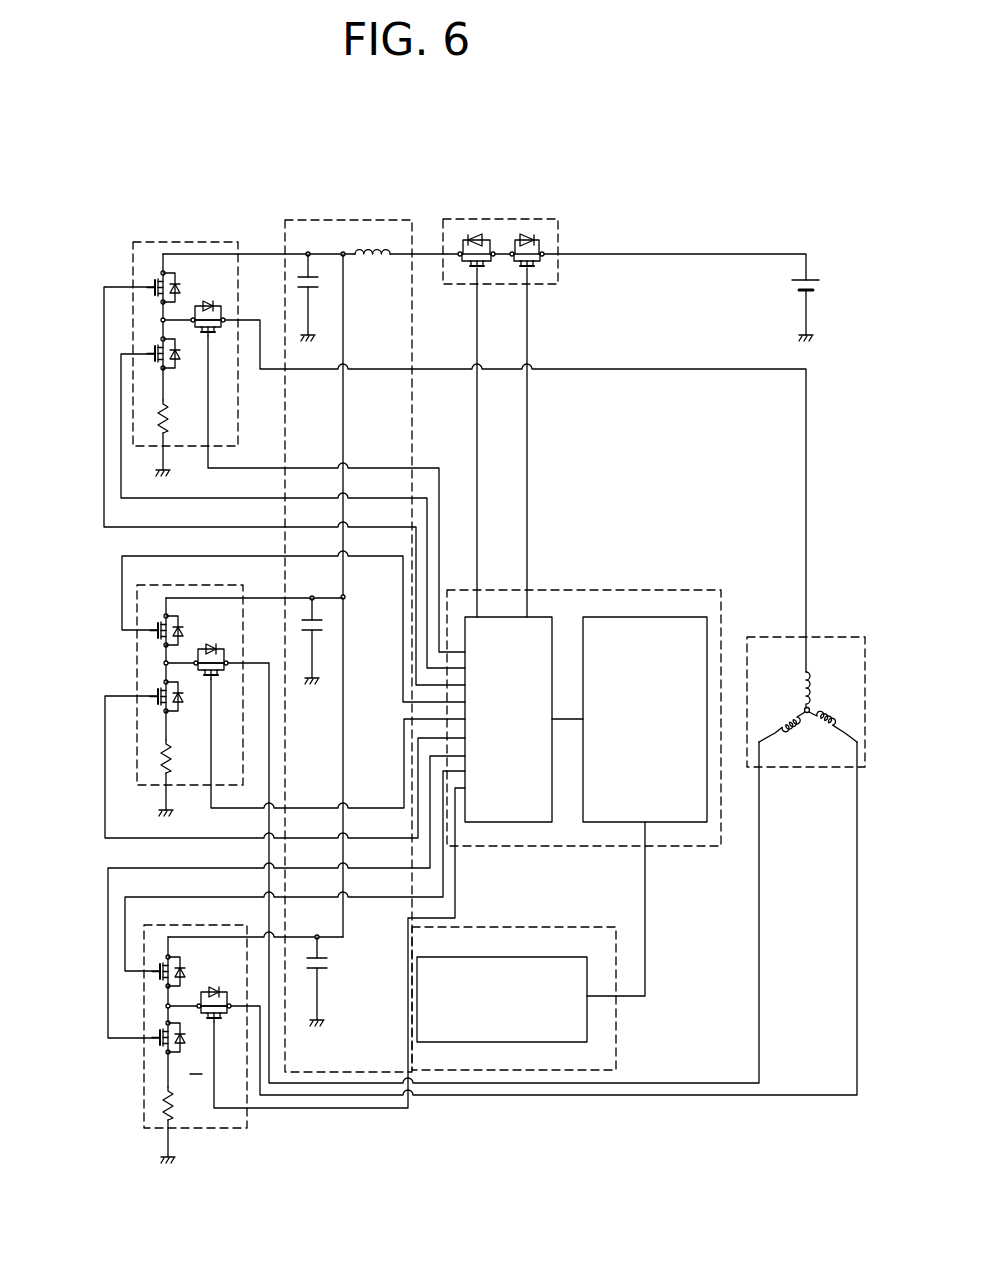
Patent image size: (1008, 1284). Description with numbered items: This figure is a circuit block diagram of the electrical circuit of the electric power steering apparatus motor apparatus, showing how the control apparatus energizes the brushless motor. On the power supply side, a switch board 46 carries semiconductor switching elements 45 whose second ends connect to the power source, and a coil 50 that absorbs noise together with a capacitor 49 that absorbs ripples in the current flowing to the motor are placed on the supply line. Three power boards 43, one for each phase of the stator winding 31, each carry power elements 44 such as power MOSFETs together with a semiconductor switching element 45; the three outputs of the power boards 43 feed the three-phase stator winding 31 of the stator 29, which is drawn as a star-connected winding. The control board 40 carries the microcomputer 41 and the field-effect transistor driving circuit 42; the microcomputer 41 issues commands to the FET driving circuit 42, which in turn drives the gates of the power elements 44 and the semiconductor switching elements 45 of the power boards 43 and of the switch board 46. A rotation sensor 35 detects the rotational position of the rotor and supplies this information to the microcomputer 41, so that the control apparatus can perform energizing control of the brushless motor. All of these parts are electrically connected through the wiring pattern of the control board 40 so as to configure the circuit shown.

The stator 29 is at (808, 768).
The three-phase stator winding 31 is at (818, 687).
The rotation sensor 35 is at (552, 937).
The control board 40 is at (632, 588).
The microcomputer 41 is at (680, 615).
The field-effect transistor (FET) driving circuit 42 is at (543, 613).
The power board 43 is at (132, 242).
The power element 44 is at (155, 274).
The semiconductor switching element 45 is at (212, 297).
The switch board 46 is at (545, 219).
The capacitor 49 is at (305, 270).
The coil 50 is at (377, 240).